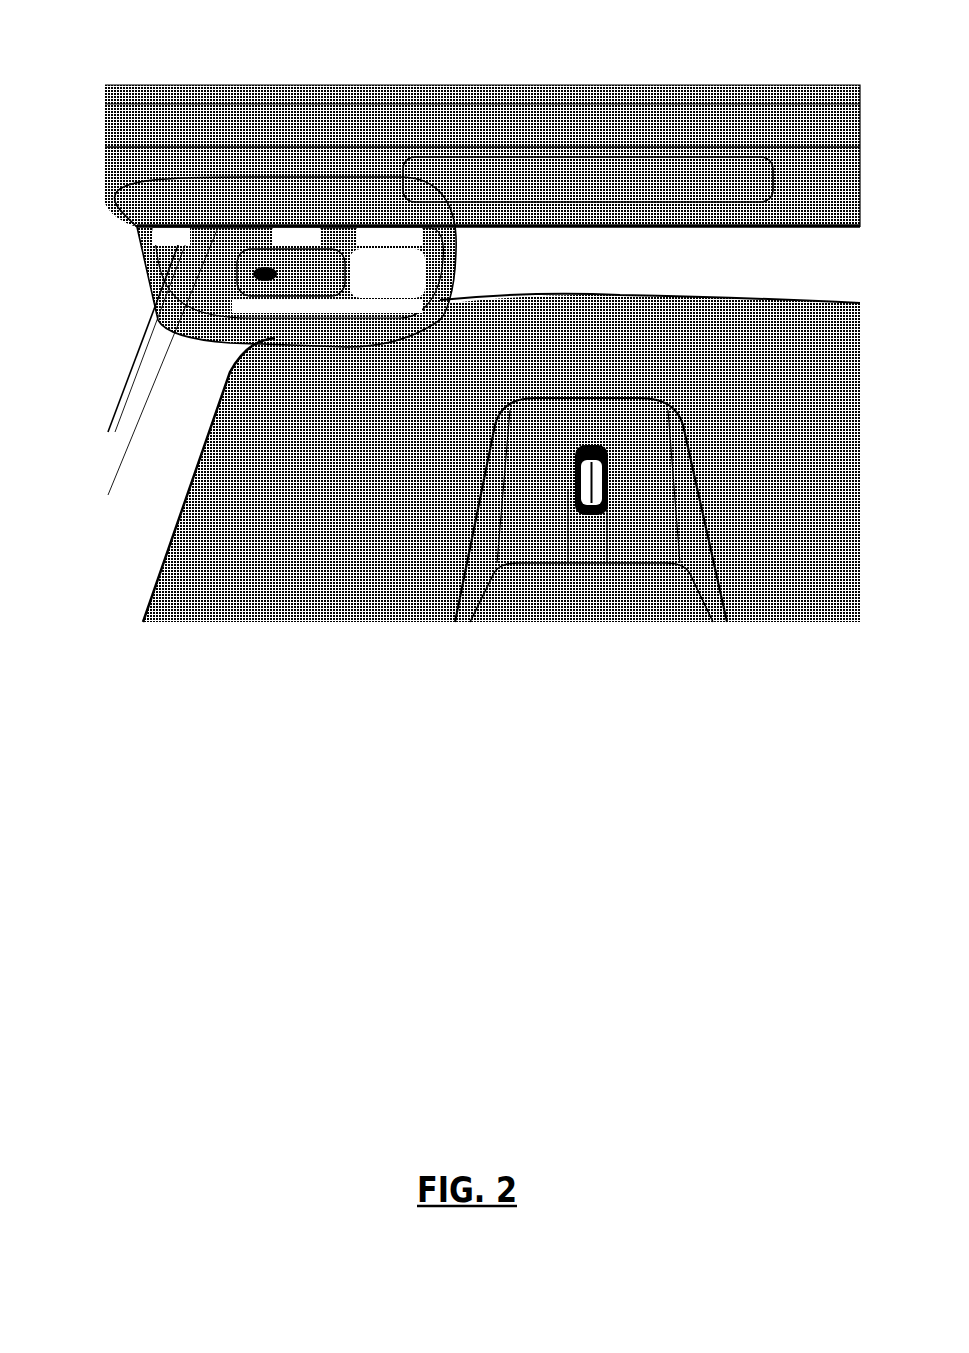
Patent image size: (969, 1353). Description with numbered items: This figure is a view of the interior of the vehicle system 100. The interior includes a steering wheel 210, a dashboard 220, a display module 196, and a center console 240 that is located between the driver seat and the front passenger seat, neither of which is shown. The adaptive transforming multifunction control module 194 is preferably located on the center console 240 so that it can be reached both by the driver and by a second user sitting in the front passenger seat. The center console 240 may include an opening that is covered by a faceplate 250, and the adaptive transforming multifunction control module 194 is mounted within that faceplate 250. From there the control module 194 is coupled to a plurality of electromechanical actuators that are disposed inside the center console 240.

The vehicle system 100 is at (258, 776).
The adaptive transforming multifunction control module 194 is at (597, 477).
The display module 196 is at (635, 178).
The steering wheel 210 is at (150, 240).
The dashboard 220 is at (427, 113).
The center console 240 is at (552, 425).
The faceplate 250 is at (588, 545).